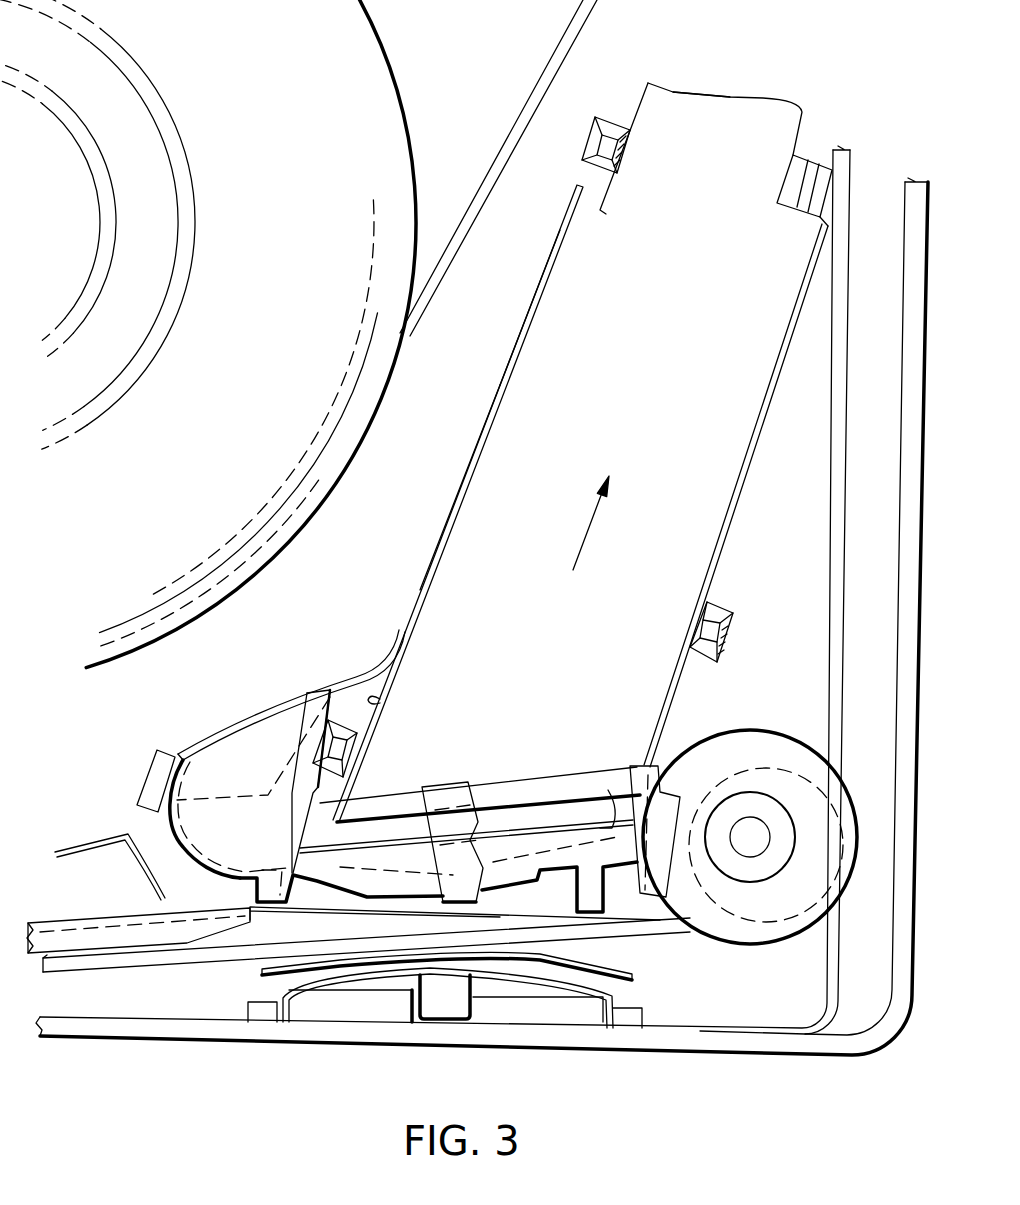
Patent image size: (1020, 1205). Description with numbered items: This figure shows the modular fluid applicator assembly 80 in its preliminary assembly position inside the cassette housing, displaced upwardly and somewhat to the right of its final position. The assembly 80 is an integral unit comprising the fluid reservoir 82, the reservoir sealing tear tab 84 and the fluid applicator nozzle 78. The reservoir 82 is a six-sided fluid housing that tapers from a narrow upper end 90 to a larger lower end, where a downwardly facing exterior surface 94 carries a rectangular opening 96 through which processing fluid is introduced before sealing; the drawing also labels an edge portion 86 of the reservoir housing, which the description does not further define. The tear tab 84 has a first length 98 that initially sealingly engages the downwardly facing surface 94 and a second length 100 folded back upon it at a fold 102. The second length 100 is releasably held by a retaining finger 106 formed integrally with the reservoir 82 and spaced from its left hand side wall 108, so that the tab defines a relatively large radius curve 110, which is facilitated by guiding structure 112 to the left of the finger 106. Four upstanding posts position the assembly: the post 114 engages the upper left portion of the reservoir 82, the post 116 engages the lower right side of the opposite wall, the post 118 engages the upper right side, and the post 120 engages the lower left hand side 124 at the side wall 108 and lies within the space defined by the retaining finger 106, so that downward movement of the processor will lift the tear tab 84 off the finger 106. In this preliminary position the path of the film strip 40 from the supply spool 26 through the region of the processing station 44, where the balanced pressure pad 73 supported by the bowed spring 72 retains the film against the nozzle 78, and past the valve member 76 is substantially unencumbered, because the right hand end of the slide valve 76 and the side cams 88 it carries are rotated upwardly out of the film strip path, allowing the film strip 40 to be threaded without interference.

The supply spool 26 is at (296, 311).
The film strip 40 is at (684, 928).
The film processing station 44 is at (672, 755).
The bowed spring 72 is at (560, 985).
The balanced pressure pad 73 is at (615, 968).
The valve member 76 is at (108, 913).
The fluid applicator nozzle 78 is at (548, 878).
The modular fluid applicator assembly 80 is at (490, 394).
The fluid reservoir 82 is at (657, 351).
The reservoir sealing tear tab 84 is at (390, 650).
The upper edge 86 is at (577, 190).
The side cams 88 is at (175, 933).
The upper end 90 is at (732, 97).
The downwardly facing exterior surface 94 is at (613, 827).
The rectangular opening 96 is at (410, 790).
The first length 98 is at (513, 827).
The second length 100 is at (247, 858).
The fold 102 is at (642, 766).
The retaining finger 106 is at (313, 693).
The left hand side wall 108 is at (533, 300).
The large radius curve 110 is at (220, 730).
The guiding structure 112 is at (207, 822).
The post 114 is at (583, 148).
The post 116 is at (733, 632).
The post 118 is at (826, 152).
The post 120 is at (345, 752).
The lower left hand side 124 is at (383, 699).